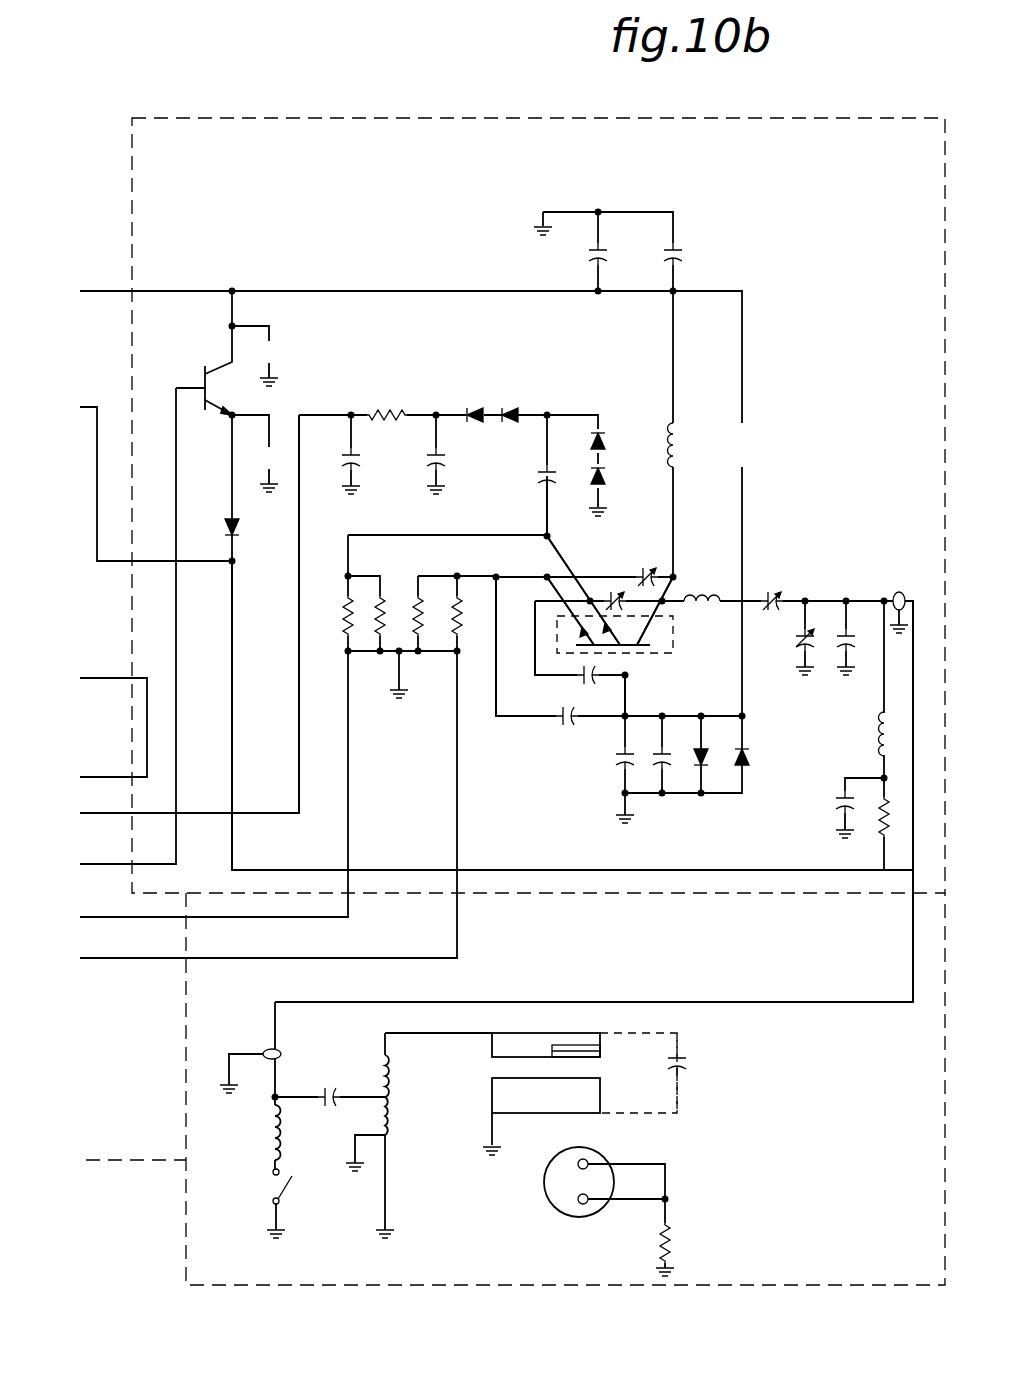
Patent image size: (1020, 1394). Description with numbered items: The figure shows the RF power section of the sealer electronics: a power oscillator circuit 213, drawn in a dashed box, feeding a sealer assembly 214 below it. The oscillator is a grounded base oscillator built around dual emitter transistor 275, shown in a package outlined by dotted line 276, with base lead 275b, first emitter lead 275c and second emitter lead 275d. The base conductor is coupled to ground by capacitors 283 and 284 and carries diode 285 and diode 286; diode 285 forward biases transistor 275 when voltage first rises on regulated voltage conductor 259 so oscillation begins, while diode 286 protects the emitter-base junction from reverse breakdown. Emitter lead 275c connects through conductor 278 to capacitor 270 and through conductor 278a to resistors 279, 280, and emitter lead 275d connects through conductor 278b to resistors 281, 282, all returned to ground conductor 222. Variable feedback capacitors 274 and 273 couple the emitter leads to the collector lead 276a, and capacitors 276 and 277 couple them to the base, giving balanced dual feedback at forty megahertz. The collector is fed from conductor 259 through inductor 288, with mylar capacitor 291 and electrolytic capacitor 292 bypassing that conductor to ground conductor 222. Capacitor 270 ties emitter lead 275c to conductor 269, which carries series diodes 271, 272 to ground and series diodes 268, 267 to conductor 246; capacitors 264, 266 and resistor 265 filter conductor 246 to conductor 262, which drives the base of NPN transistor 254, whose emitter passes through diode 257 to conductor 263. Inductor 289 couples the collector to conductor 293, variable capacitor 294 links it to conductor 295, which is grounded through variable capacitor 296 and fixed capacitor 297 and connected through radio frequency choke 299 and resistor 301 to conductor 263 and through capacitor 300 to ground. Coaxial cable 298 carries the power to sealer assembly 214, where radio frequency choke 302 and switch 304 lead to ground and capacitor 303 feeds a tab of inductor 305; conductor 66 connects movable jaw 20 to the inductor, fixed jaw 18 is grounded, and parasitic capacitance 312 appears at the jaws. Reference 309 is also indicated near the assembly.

The power oscillator circuit 213 is at (420, 117).
The sealer assembly 214 is at (816, 1283).
The ground conductor 222 is at (540, 222).
The NPN transistor 254 is at (212, 367).
The diode 257 is at (240, 528).
The regulated voltage conductor 259 is at (393, 292).
The conductor 262 is at (322, 413).
The conductor 263 is at (236, 738).
The capacitor 264 is at (346, 457).
The resistor 265 is at (386, 410).
The capacitor 266 is at (430, 458).
The conductor 246 is at (467, 410).
The diode 268 is at (498, 409).
The diode 267 is at (527, 410).
The conductor 269 is at (580, 413).
The capacitor 270 is at (541, 475).
The diode 271 is at (607, 440).
The diode 272 is at (607, 476).
The variable feedback capacitor 273 is at (648, 570).
The variable feedback capacitor 274 is at (612, 596).
The transistor 275 is at (645, 650).
The base lead 275b is at (628, 690).
The first emitter lead 275c is at (605, 628).
The second emitter lead 275d is at (578, 630).
The capacitor 276 is at (584, 678).
The collector lead 276a is at (668, 590).
The capacitor 277 is at (566, 725).
The conductor 278 is at (543, 532).
The conductor 278a is at (433, 535).
The conductor 278b is at (497, 572).
The resistor 279 is at (345, 605).
The resistor 280 is at (377, 622).
The resistor 281 is at (417, 600).
The resistor 282 is at (455, 632).
The capacitor 283 is at (620, 760).
The capacitor 284 is at (657, 760).
The diode 285 is at (697, 762).
The diode 286 is at (749, 758).
The inductor 288 is at (678, 445).
The inductor 289 is at (707, 605).
The capacitor 291 is at (680, 250).
The capacitor 292 is at (594, 250).
The conductor 293 is at (772, 596).
The variable capacitor 294 is at (846, 598).
The conductor 295 is at (896, 594).
The variable capacitor 296 is at (800, 642).
The fixed capacitor 297 is at (843, 652).
The coaxial cable 298 is at (913, 680).
The radio frequency choke 299 is at (882, 740).
The capacitor 300 is at (840, 803).
The resistor 301 is at (880, 832).
The radio frequency choke 302 is at (270, 1138).
The capacitor 303 is at (332, 1090).
The switch 304 is at (272, 1203).
The inductor 305 is at (392, 1082).
The conductor 66 is at (422, 1033).
The movable jaw 20 is at (543, 1032).
The fixed jaw 18 is at (549, 1114).
The parasitic capacitance 312 is at (685, 1058).
The emitter bonding leads 309 is at (549, 1201).